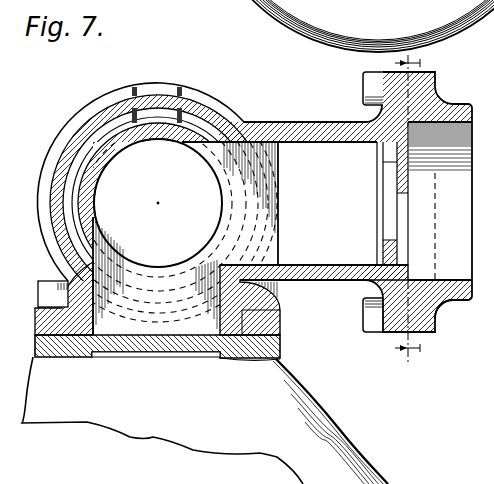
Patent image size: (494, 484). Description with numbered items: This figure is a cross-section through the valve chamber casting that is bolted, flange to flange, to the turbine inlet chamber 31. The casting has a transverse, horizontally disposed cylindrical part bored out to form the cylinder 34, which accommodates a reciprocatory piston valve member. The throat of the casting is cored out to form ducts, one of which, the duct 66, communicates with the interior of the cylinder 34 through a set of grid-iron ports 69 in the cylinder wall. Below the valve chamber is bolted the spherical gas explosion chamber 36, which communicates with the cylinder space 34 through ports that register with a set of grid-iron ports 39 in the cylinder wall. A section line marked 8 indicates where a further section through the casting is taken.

The cylinder 34 is at (158, 203).
The grid-iron ports 69 is at (158, 203).
The duct 66 is at (327, 202).
The grid-iron ports 39 is at (155, 276).
The turbine inlet chamber 31 is at (453, 302).
The spherical gas explosion chamber 36 is at (366, 441).
The section line 8- 8 is at (419, 218).